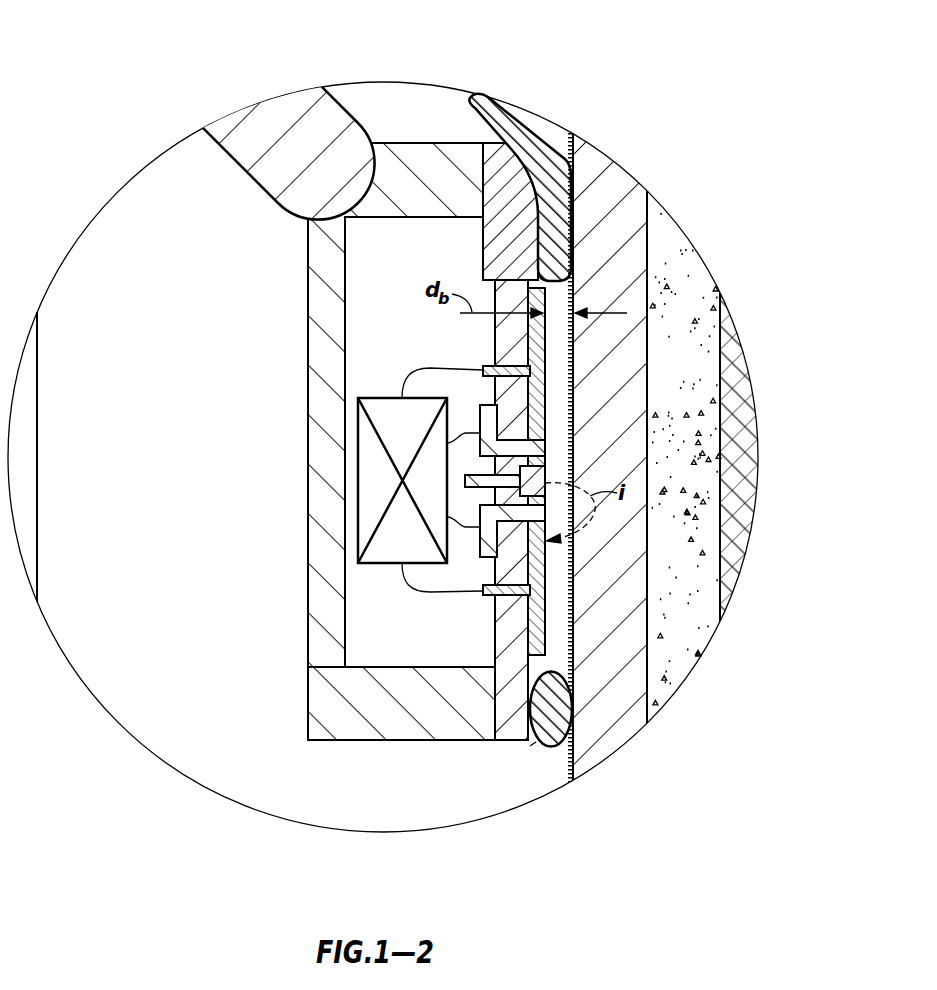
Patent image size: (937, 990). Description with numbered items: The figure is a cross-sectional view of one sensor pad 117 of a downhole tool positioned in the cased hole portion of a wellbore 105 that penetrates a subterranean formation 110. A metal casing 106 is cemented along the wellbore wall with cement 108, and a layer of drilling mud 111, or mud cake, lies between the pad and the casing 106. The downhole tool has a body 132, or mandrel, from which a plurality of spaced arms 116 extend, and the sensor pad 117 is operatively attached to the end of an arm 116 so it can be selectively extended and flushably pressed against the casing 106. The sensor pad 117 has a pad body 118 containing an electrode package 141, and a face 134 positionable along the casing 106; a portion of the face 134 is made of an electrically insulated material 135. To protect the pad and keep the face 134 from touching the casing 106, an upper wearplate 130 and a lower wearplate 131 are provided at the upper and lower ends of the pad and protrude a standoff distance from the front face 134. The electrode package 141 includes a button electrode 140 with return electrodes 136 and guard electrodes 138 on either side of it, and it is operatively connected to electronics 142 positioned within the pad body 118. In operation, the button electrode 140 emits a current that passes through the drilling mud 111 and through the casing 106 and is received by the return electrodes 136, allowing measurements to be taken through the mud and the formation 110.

The wellbore 105 is at (566, 158).
The casing 106 is at (630, 720).
The cement 108 is at (677, 657).
The formation 110 is at (735, 565).
The mud 111 is at (573, 652).
The arm 116 is at (258, 125).
The sensor pad 117 is at (311, 752).
The pad body 118 is at (373, 728).
The upper wearplate 130 is at (573, 157).
The lower wearplate 131 is at (550, 745).
The body 132 is at (37, 405).
The face 134 is at (577, 677).
The electrically insulated material 135 is at (497, 645).
The return electrode 136 is at (545, 372).
The guard electrode 138 is at (545, 443).
The button electrode 140 is at (545, 470).
The electrode package 141 is at (455, 348).
The electronics 142 is at (358, 517).